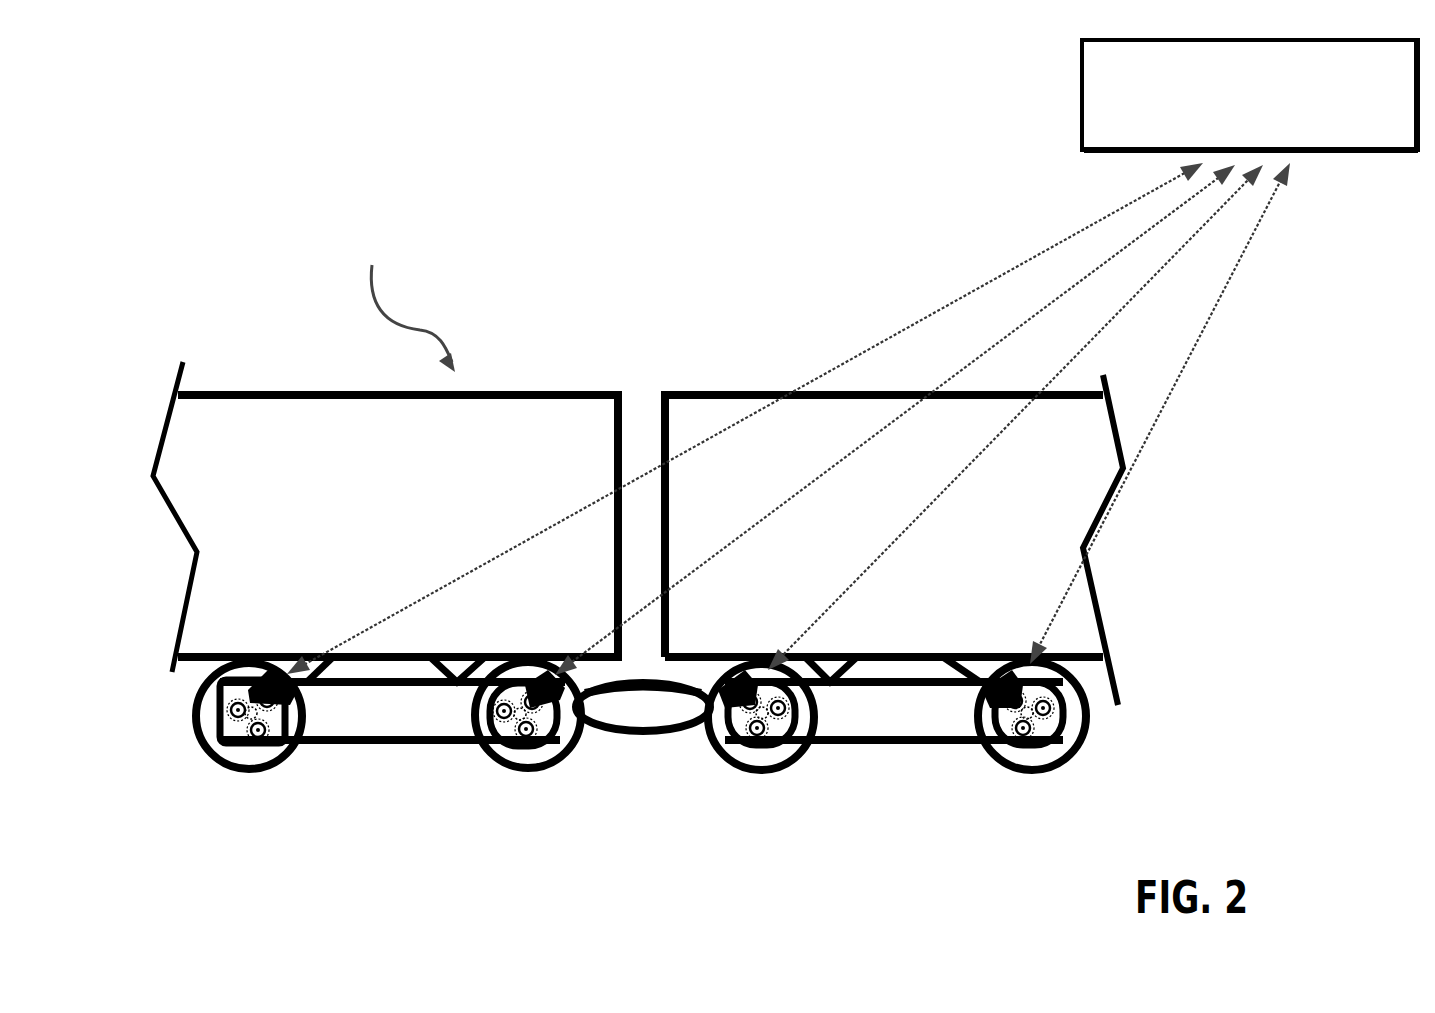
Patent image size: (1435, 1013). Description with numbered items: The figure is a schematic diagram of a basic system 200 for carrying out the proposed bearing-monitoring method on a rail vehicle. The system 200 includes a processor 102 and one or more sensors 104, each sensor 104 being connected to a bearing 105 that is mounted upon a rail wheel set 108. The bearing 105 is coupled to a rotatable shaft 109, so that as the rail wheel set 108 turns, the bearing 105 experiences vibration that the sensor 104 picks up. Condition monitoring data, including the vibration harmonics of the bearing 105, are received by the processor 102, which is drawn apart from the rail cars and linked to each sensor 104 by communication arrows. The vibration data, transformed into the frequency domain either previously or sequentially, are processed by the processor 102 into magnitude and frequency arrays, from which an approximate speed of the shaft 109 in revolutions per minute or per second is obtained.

The system 200 is at (800, 174).
The processor 102 is at (859, 353).
The rail wheel set 108 is at (228, 768).
The bearing 105 is at (240, 727).
The rotatable shaft 109 is at (253, 703).
The sensor 104 is at (297, 702).